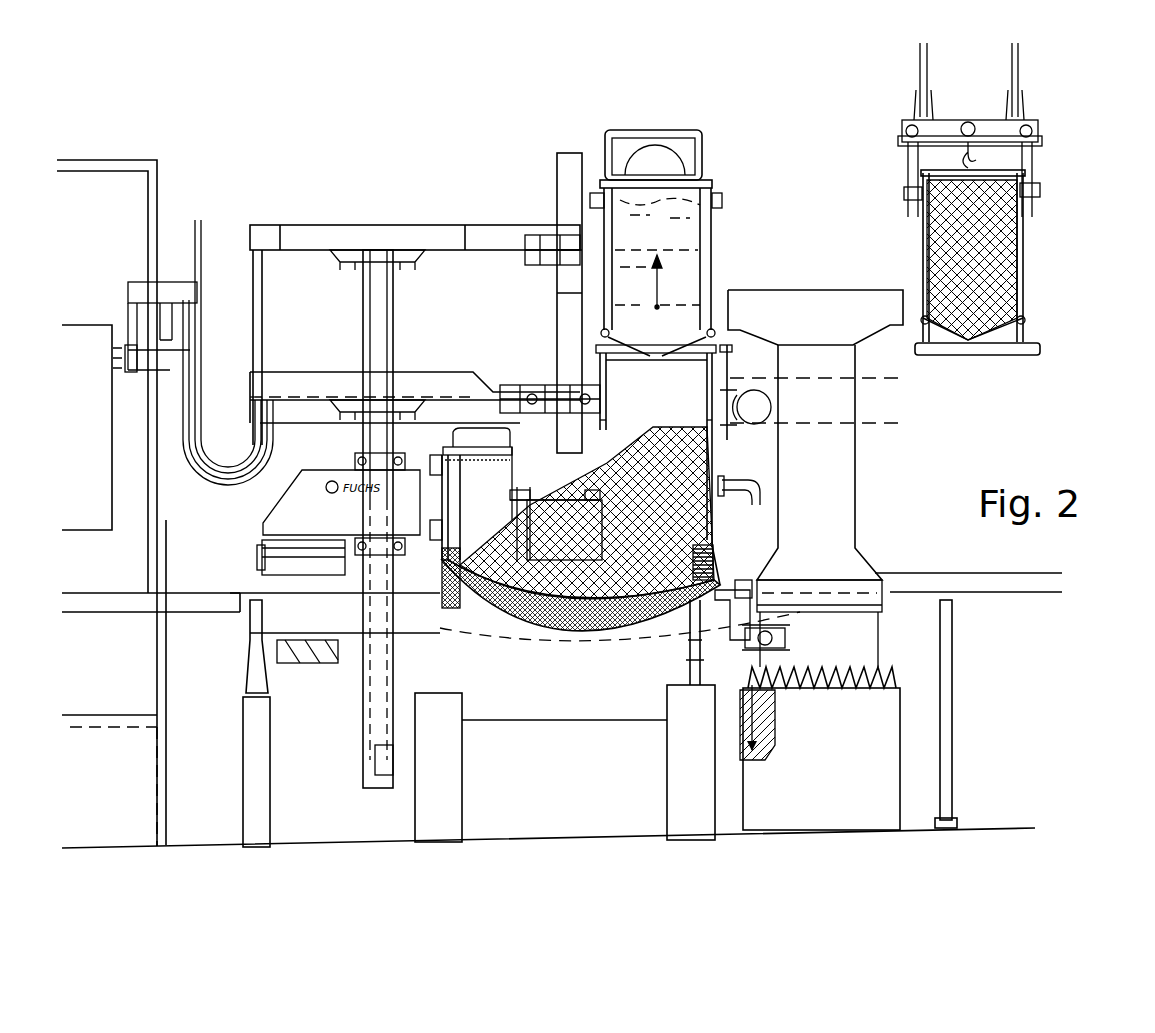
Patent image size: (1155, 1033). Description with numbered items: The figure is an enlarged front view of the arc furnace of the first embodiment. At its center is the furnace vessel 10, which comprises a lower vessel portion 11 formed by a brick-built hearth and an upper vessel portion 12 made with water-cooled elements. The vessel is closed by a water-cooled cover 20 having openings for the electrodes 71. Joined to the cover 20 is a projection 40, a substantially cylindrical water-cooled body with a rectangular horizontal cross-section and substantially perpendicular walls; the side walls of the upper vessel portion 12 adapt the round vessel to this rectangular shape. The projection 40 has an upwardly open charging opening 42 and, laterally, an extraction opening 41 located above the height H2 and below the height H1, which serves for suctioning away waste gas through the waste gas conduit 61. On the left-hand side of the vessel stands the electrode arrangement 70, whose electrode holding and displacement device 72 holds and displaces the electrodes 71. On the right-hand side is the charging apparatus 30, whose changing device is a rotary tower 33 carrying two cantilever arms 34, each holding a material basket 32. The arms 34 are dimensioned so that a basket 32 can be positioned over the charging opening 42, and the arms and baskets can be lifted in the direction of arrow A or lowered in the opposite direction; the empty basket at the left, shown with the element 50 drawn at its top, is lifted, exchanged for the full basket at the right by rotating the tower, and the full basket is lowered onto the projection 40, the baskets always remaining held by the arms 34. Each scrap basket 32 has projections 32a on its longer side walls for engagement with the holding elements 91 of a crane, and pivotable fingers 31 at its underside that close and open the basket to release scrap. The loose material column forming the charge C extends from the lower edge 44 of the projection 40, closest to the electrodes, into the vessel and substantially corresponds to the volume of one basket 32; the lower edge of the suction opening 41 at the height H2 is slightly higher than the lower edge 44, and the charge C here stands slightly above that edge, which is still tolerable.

The furnace vessel 10 is at (620, 564).
The lower vessel portion 11 is at (600, 625).
The upper vessel portion 12 is at (448, 528).
The cover 20 is at (475, 456).
The charging apparatus 30 is at (818, 182).
The fingers 31 is at (665, 350).
The material basket 32 is at (718, 226).
The projections 32a is at (1040, 188).
The rotary tower 33 is at (868, 456).
The cantilever arms 34 is at (730, 290).
The projection 40 is at (684, 392).
The extraction opening 41 is at (707, 408).
The charging opening 42 is at (656, 378).
The lower edge 44 is at (623, 408).
The container lid frame 50 is at (667, 130).
The waste gas conduit 61 is at (752, 426).
The electrode arrangement 70 is at (392, 208).
The electrodes 71 is at (557, 320).
The electrode holding and displacement device 72 is at (444, 348).
The holding elements 91 is at (1050, 85).
The arrow A is at (660, 300).
The charge C is at (712, 536).
The height H1 is at (905, 378).
The height H2 is at (905, 424).